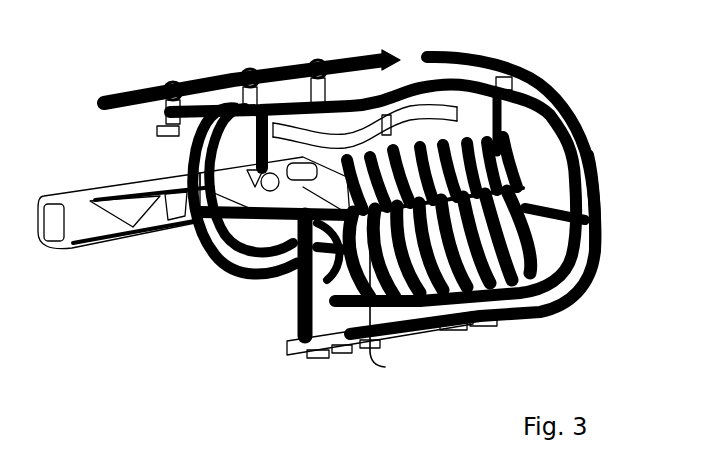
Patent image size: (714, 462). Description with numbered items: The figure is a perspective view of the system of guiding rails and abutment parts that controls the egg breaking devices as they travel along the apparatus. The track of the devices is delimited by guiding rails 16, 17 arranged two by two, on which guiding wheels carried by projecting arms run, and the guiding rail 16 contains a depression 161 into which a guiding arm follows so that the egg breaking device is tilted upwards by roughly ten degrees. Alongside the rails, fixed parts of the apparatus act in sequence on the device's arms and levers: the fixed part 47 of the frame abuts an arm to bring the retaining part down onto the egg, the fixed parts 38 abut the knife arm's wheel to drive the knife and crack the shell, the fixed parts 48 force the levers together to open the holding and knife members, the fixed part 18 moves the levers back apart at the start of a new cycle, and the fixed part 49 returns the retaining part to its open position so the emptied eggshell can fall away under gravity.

The guiding rail 16 is at (598, 122).
The guiding rail 17 is at (553, 97).
The depression 161 is at (597, 184).
The fixed part 18 is at (160, 130).
The fixed part 49 is at (67, 193).
The fixed part of the frame 47 is at (551, 243).
The fixed parts 38 is at (393, 305).
The fixed parts 48 is at (420, 330).